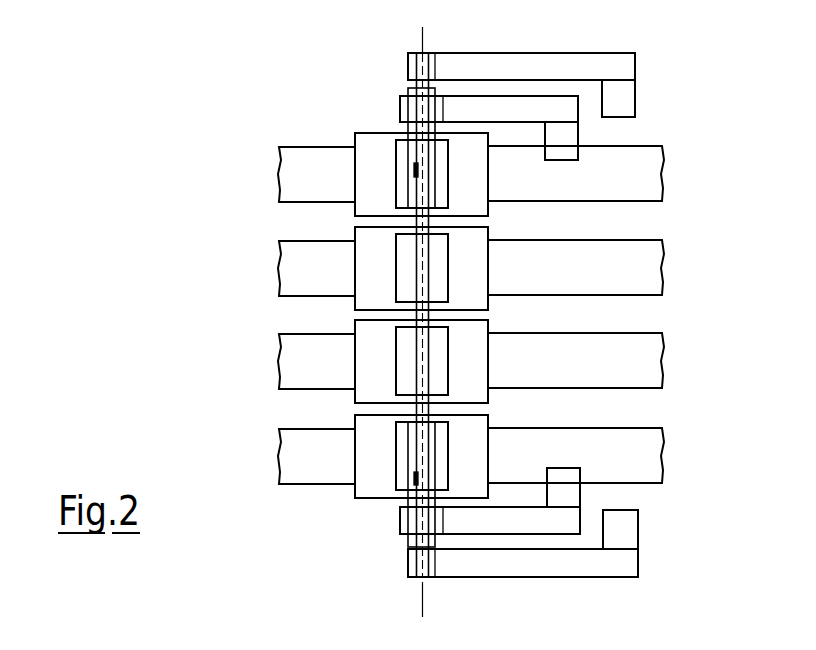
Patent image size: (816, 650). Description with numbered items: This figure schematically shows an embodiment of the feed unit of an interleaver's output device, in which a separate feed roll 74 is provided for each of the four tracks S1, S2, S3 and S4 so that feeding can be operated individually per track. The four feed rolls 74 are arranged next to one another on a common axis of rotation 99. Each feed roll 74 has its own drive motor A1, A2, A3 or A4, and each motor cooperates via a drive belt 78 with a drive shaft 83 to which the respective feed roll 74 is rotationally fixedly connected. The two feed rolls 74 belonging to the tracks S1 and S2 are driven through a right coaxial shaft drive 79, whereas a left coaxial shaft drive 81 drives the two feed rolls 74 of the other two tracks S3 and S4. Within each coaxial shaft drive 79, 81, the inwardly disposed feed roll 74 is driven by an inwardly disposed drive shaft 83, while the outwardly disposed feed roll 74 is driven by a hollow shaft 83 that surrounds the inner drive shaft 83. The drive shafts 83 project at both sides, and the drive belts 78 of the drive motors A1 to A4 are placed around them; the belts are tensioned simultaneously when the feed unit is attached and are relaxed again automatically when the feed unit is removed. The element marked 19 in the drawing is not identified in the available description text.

The valve lever / arm 19 is at (637, 186).
The feed roll 74 is at (368, 180).
The drive belt 78 is at (468, 108).
The right coaxial shaft drive 79 is at (358, 95).
The left coaxial shaft drive 81 is at (370, 532).
The drive shaft 83 is at (417, 165).
The common axis of rotation 99 is at (422, 602).
The drive motor A1 is at (568, 137).
The drive motor A2 is at (625, 95).
The drive motor A3 is at (623, 537).
The drive motor A4 is at (568, 497).
The track S1 is at (665, 173).
The track S2 is at (665, 267).
The track S3 is at (665, 360).
The track S4 is at (665, 455).